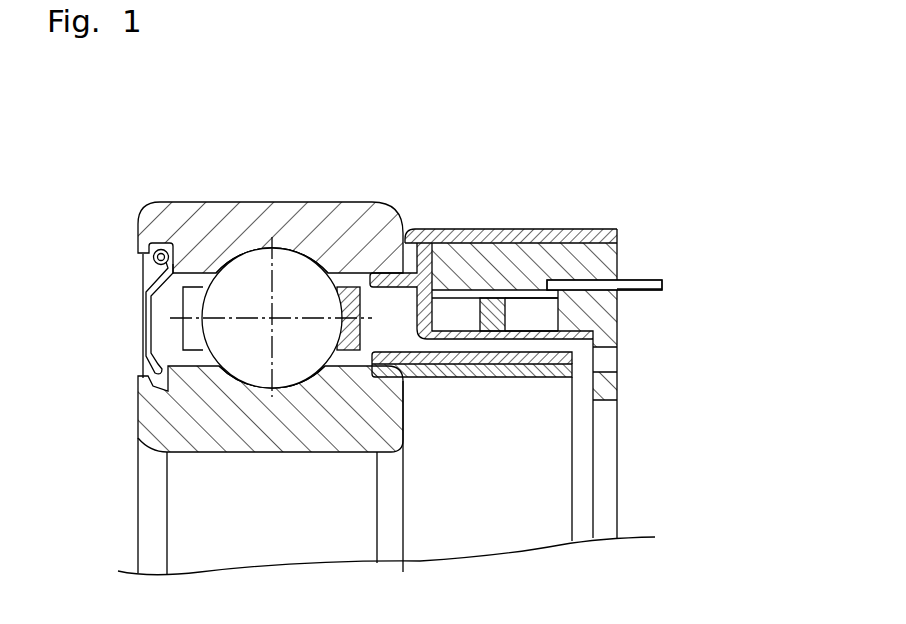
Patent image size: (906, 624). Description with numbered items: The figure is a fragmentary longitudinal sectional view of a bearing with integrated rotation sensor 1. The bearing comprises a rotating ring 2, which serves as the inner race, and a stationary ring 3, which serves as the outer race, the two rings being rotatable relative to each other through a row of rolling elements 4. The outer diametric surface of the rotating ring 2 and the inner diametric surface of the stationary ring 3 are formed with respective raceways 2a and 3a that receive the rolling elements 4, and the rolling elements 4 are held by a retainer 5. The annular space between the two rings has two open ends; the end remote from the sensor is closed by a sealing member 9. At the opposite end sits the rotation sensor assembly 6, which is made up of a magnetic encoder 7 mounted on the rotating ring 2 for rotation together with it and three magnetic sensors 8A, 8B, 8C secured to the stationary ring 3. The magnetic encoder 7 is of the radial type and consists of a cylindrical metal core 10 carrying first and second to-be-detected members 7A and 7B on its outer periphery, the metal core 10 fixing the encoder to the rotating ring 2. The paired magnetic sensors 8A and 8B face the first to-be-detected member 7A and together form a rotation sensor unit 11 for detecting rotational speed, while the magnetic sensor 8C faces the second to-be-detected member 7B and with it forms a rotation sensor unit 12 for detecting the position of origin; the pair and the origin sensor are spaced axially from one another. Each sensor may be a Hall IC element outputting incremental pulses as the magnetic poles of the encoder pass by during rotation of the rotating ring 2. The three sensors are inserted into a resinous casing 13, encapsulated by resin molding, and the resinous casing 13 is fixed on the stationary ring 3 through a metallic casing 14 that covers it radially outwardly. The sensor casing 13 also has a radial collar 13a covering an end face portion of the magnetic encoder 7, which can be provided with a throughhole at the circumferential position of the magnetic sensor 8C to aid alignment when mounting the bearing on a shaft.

The bearing with integrated rotation sensor 1 is at (135, 182).
The rotating ring 2 is at (150, 421).
The raceway 2a is at (257, 372).
The stationary ring 3 is at (210, 222).
The raceway 3a is at (298, 258).
The rolling elements 4 is at (247, 283).
The retainer 5 is at (147, 306).
The rotation sensor assembly 6 is at (654, 380).
The magnetic encoder 7 is at (545, 416).
The first to-be-detected member 7A is at (478, 377).
The second to-be-detected member 7B is at (527, 368).
The magnetic sensor 8A is at (458, 312).
The magnetic sensor 8B is at (604, 285).
The magnetic sensor 8C is at (537, 318).
The sealing member 9 is at (145, 342).
The metal core 10 is at (442, 378).
The rotation sensor unit 11 is at (460, 280).
The rotation sensor unit 12 is at (528, 286).
The resinous casing 13 is at (618, 339).
The radial collar 13a is at (428, 268).
The metallic casing 14 is at (480, 232).